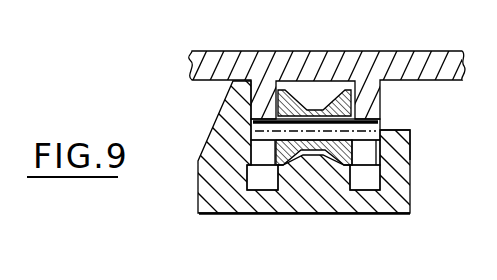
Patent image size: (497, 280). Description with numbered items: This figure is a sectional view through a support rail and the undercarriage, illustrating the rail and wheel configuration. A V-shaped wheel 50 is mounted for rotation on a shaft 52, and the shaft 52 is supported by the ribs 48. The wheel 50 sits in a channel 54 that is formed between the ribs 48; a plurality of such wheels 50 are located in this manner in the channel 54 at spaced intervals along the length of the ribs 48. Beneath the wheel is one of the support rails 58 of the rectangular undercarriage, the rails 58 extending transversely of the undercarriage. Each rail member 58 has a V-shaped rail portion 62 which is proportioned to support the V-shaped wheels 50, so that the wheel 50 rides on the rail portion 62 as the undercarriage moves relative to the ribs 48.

The ribs 48 is at (261, 95).
The V-shaped wheel 50 is at (383, 113).
The shaft 52 is at (386, 131).
The channel 54 is at (317, 93).
The support rail 58 is at (245, 202).
The V-shaped rail portion 62 is at (318, 181).